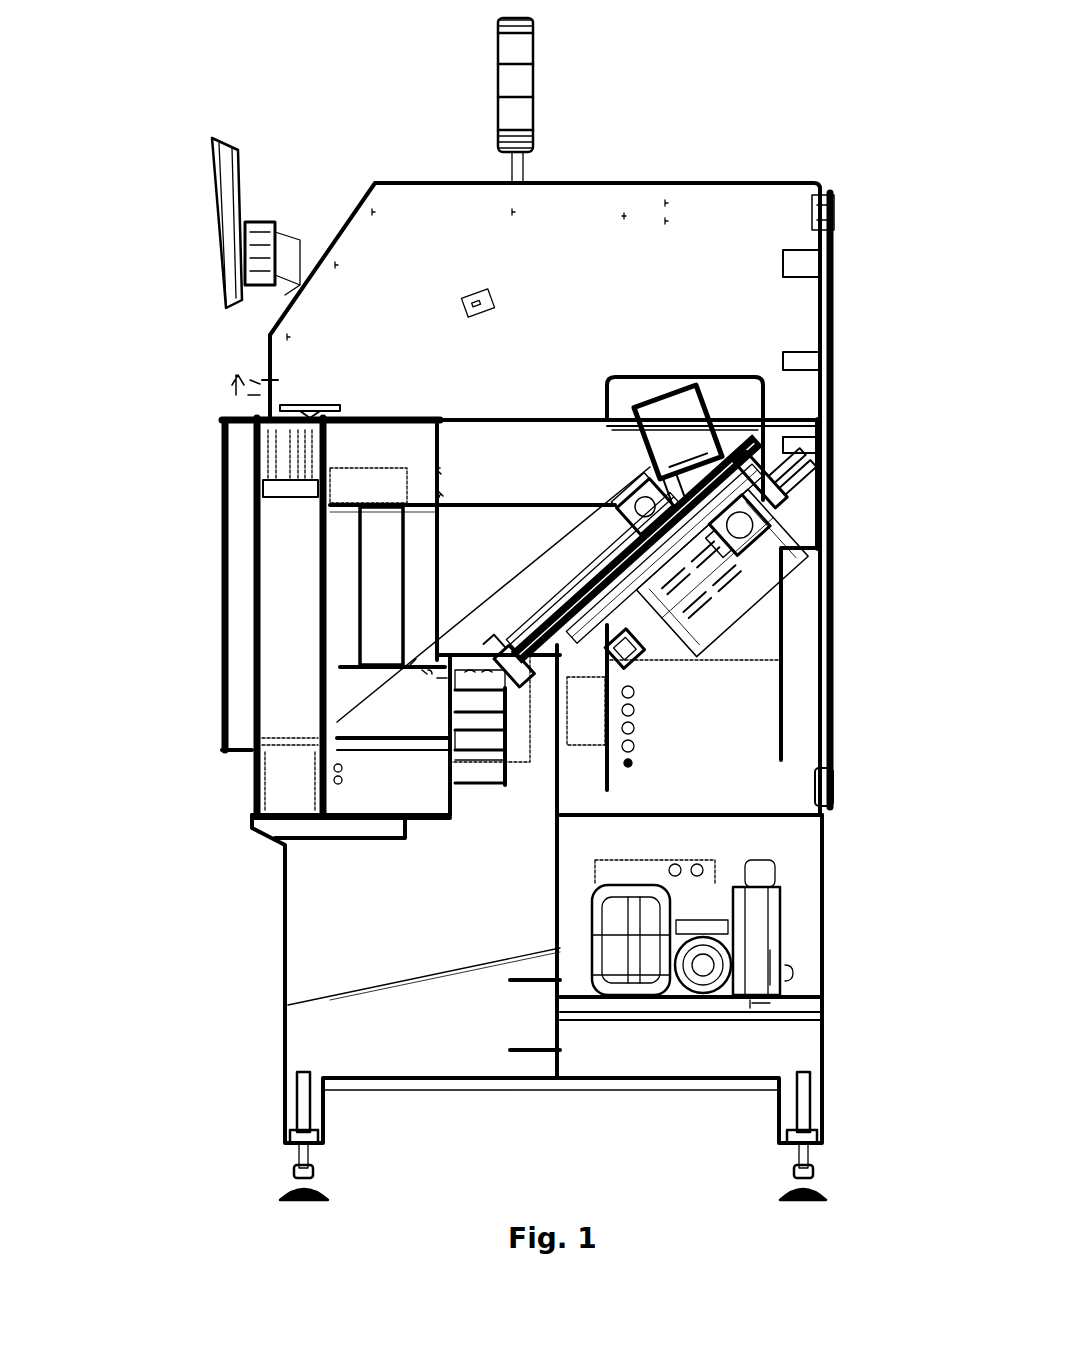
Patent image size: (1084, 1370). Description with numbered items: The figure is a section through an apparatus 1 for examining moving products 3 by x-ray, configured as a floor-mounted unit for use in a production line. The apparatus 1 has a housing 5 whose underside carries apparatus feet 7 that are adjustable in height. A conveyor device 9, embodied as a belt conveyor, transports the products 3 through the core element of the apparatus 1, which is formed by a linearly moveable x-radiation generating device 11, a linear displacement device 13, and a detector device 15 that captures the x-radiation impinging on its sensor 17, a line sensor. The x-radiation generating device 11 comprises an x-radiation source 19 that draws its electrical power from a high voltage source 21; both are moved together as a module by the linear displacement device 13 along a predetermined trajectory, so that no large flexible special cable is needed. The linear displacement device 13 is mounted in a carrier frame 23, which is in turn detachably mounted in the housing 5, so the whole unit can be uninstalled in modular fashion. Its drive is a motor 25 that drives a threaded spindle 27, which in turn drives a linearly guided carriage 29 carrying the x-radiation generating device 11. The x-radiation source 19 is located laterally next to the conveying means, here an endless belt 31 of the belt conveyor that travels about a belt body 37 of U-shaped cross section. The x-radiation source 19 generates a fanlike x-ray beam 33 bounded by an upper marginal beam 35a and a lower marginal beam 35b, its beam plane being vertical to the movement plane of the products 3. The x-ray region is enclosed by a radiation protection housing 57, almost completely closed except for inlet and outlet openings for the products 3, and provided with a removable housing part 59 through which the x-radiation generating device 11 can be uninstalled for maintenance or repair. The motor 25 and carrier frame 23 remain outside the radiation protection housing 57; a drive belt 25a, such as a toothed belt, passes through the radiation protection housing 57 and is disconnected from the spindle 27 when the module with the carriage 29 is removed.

The apparatus 1 is at (738, 96).
The products 3 is at (392, 544).
The housing 5 is at (836, 507).
The apparatus feet 7 is at (306, 1148).
The conveyor device 9 is at (425, 752).
The x-radiation generating device 11 is at (617, 468).
The linear displacement device 13 is at (631, 602).
The detector device 15 is at (252, 688).
The sensor 17 is at (273, 600).
The x-radiation source 19 is at (628, 498).
The high voltage source 21 is at (693, 408).
The carrier frame 23 is at (735, 622).
The motor 25 is at (743, 543).
The drive belt 25a is at (773, 490).
The threaded spindle 27 is at (587, 580).
The carriage 29 is at (580, 607).
The endless belt 31 is at (383, 670).
The x-ray beam 33 is at (483, 508).
The upper marginal beam 35a is at (493, 507).
The lower marginal beam 35b is at (490, 607).
The belt body 37 is at (436, 715).
The radiation protection housing 57 is at (454, 412).
The removable housing part 59 is at (740, 377).